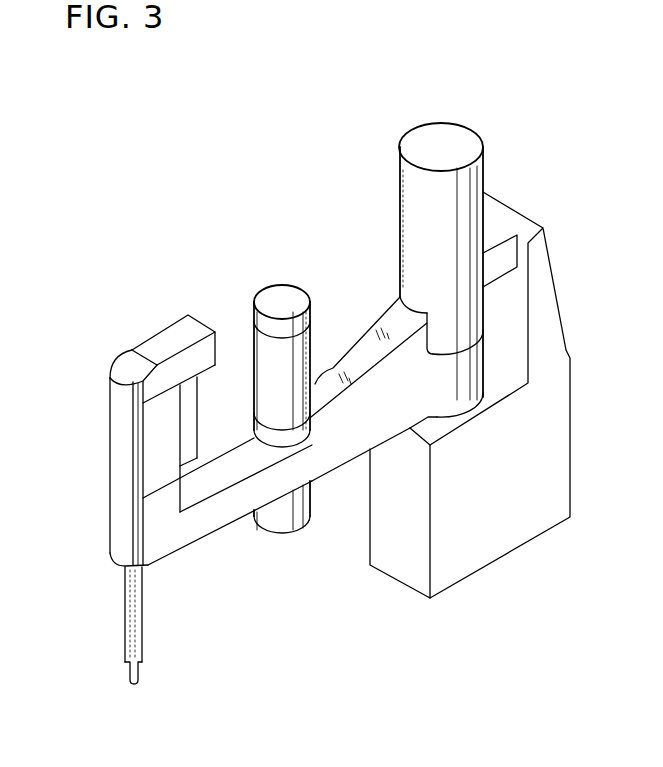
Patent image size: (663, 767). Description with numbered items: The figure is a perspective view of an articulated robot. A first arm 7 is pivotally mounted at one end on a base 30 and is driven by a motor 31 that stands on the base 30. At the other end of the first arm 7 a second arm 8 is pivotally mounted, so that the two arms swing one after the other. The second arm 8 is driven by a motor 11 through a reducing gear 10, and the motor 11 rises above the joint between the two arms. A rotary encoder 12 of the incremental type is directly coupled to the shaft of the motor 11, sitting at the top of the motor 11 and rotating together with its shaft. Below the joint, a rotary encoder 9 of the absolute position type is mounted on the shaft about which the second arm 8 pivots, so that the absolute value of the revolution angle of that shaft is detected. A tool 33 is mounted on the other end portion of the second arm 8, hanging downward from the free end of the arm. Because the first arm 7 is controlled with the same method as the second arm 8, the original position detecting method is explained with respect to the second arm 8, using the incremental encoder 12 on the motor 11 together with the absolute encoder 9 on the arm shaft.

The first arm 7 is at (383, 377).
The second arm 8 is at (215, 517).
The rotary encoder of an absolute position type 9 is at (293, 523).
The reducing gear 10 is at (287, 438).
The motor 11 is at (262, 360).
The rotary encoder of an incremental type 12 is at (269, 297).
The base 30 is at (507, 542).
The motor 31 is at (452, 202).
The tool 33 is at (128, 670).